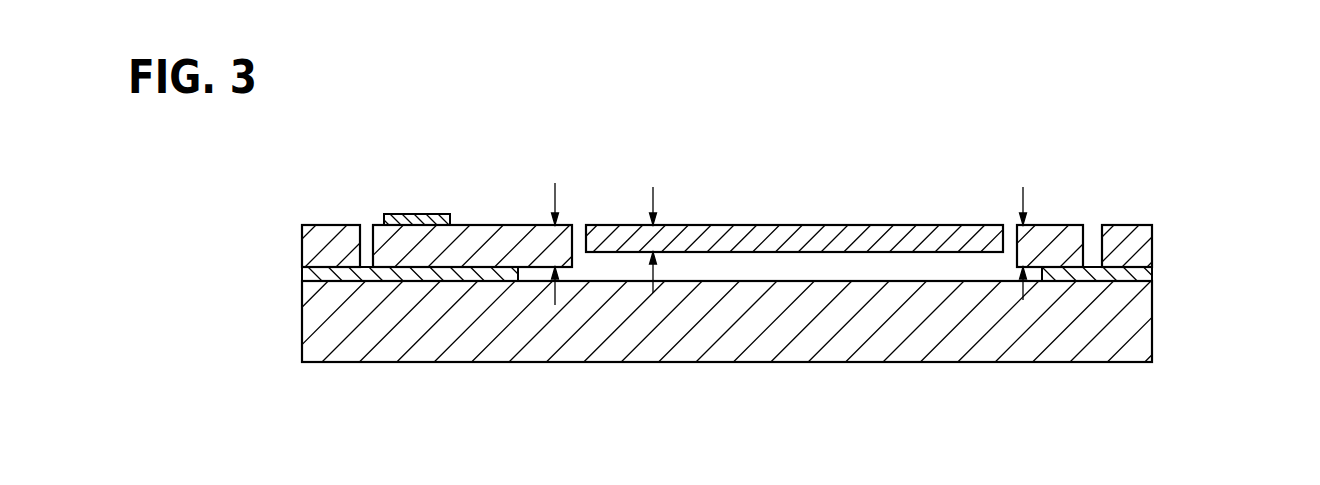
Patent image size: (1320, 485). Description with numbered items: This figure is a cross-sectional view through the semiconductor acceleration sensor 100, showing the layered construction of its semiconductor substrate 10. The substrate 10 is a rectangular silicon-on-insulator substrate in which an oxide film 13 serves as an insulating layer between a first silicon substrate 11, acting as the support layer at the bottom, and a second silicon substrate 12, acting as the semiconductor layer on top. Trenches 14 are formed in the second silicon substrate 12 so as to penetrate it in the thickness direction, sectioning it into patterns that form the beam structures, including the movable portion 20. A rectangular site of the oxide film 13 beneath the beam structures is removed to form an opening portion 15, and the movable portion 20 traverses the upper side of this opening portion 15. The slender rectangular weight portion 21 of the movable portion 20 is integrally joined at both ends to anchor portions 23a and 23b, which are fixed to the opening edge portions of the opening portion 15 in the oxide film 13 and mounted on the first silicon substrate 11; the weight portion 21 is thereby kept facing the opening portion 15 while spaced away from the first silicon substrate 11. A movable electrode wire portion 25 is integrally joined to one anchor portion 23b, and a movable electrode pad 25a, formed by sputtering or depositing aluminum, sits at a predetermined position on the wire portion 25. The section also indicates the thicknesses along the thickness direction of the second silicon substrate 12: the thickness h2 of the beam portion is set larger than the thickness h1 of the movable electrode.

The semiconductor acceleration sensor 100 is at (1197, 171).
The semiconductor substrate 10 is at (1228, 232).
The first silicon substrate 11 is at (1142, 300).
The second silicon substrate 12 is at (1142, 250).
The oxide film 13 is at (1142, 268).
The trenches 14 is at (365, 224).
The opening portion 15 is at (710, 267).
The movable portion 20 is at (833, 225).
The weight portion 21 is at (765, 224).
The anchor portion 23a is at (1068, 224).
The anchor portion 23b is at (513, 224).
The movable electrode wire portion 25 is at (459, 224).
The movable electrode pad 25a is at (415, 212).
The thickness of the movable electrode h1 is at (670, 223).
The thickness of the beam portion h2 is at (563, 224).